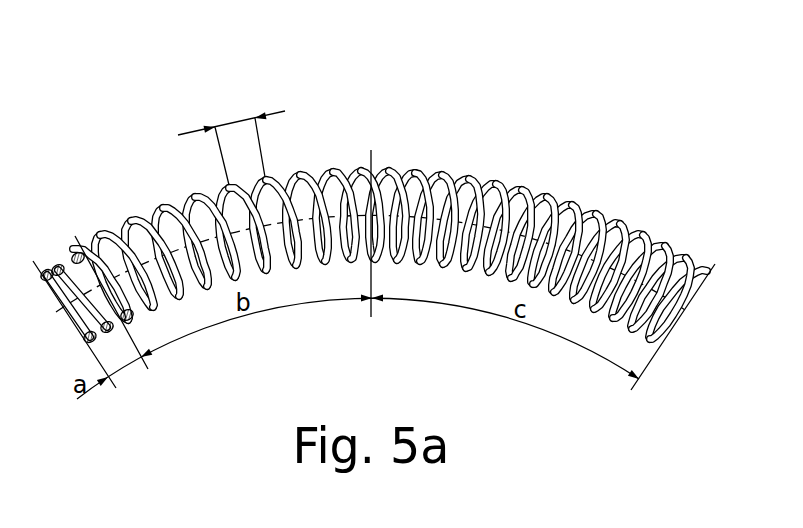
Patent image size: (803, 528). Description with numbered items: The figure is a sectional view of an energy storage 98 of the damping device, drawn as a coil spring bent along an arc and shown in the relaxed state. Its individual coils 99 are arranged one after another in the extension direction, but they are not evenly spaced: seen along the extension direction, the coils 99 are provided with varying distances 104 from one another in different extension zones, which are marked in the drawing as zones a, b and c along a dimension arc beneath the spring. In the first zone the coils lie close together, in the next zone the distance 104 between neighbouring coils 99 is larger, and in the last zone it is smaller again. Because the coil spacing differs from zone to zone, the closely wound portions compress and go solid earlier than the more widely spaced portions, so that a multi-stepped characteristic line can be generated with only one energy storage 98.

The energy storage 98 is at (553, 198).
The coils 99 is at (472, 188).
The distances 104 is at (234, 124).